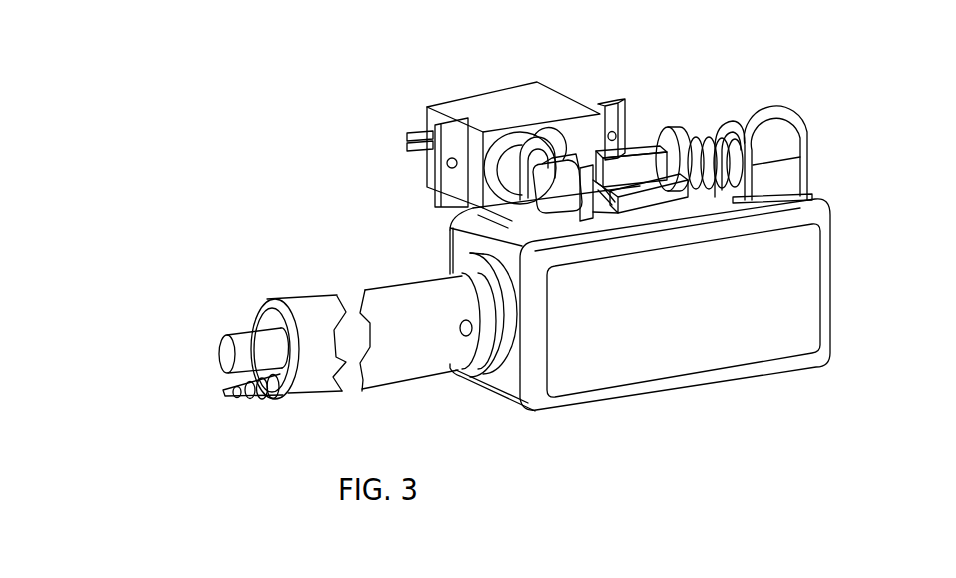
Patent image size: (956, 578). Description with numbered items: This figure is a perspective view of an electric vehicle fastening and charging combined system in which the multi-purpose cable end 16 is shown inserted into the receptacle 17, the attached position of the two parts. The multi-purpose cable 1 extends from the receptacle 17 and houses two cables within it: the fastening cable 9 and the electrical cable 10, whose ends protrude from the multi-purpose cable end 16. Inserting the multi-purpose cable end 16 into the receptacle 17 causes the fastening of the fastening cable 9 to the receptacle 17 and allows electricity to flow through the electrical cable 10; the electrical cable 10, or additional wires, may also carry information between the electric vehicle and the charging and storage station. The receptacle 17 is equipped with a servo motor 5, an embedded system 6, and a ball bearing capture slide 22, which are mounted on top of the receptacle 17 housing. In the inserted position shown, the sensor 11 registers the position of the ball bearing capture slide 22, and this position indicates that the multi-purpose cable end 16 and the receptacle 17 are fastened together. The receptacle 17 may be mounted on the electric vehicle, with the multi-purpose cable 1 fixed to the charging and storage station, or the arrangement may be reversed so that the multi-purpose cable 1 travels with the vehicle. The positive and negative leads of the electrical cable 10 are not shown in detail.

The multi-purpose cable 1 is at (213, 318).
The servo motor 5 is at (538, 153).
The embedded system 6 is at (515, 100).
The fastening cable 9 is at (224, 353).
The electrical cable 10 is at (222, 393).
The sensor 11 is at (645, 165).
The multi-purpose cable end 16 is at (442, 238).
The receptacle 17 is at (567, 428).
The ball bearing capture slide 22 is at (665, 135).